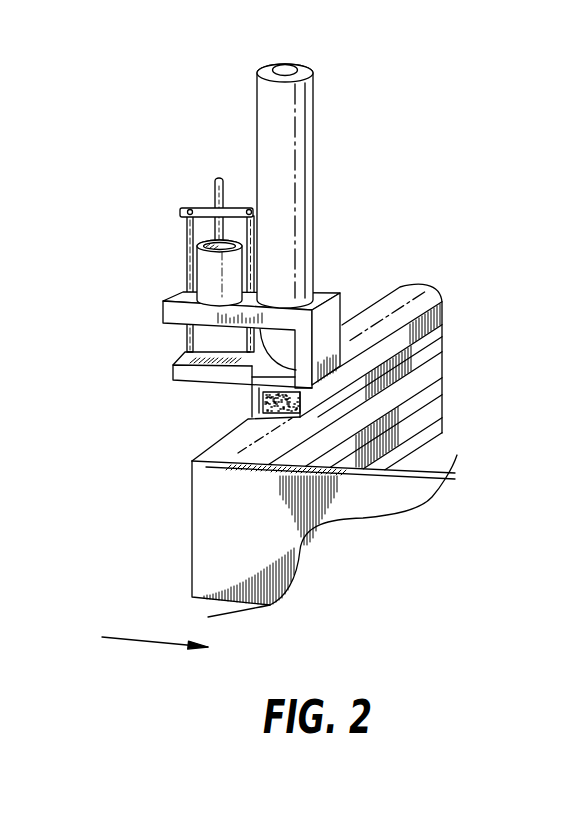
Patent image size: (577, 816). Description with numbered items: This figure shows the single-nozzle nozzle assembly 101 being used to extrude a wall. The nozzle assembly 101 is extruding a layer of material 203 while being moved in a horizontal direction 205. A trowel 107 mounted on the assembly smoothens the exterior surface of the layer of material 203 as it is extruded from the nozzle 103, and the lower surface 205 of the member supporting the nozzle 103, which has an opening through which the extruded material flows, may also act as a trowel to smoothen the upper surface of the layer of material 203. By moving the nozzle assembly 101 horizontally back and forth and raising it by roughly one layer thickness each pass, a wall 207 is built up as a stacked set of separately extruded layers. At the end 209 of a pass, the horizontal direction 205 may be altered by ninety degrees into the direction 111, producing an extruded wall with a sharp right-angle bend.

The nozzle assembly 101 is at (321, 253).
The nozzle 103 is at (313, 225).
The trowel 107 is at (250, 399).
The trowel linkage 111 is at (175, 650).
The layer of material 203 is at (313, 402).
The horizontal direction 205 is at (278, 398).
The wall 207 is at (456, 284).
The end of a pass 209 is at (192, 482).